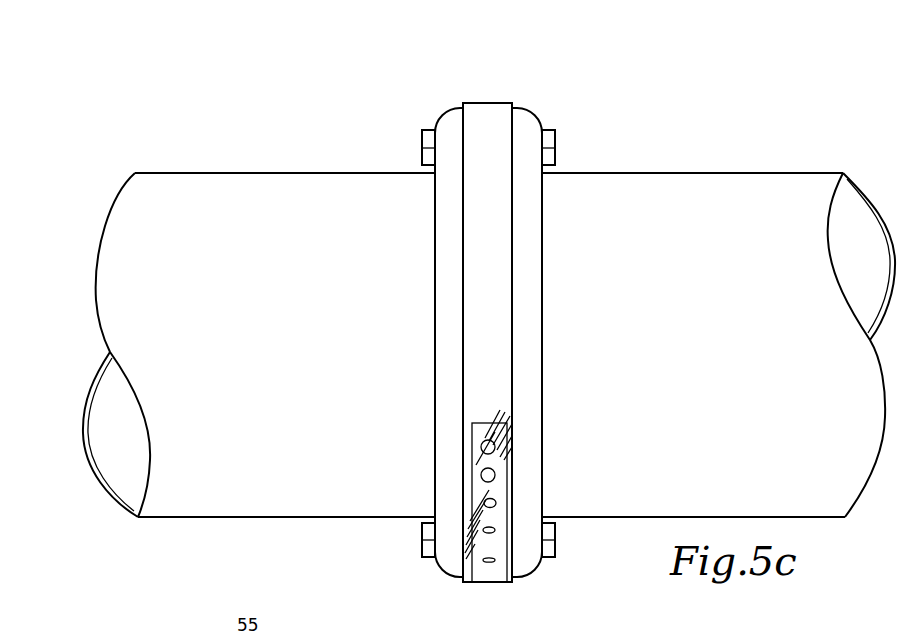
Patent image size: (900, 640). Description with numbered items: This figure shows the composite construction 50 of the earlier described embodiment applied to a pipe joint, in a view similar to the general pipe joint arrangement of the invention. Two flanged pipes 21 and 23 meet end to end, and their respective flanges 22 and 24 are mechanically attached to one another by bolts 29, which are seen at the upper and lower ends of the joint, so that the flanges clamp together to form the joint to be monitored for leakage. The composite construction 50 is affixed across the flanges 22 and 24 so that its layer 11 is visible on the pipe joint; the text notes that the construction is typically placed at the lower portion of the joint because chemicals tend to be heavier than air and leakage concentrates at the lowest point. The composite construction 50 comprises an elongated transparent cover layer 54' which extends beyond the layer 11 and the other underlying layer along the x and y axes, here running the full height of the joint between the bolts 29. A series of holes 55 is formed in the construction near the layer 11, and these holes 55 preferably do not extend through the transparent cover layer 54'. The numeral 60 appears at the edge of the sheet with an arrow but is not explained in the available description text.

The layer 11 is at (497, 465).
The flanged pipe 21 is at (220, 197).
The flange 22 is at (445, 231).
The flanged pipe 23 is at (682, 193).
The flange 24 is at (530, 248).
The bolts 29 is at (556, 145).
The composite construction 50 is at (498, 341).
The elongated transparent cover layer 54' is at (466, 323).
The holes 55 is at (487, 562).
The arrow indicator 60 is at (143, 637).